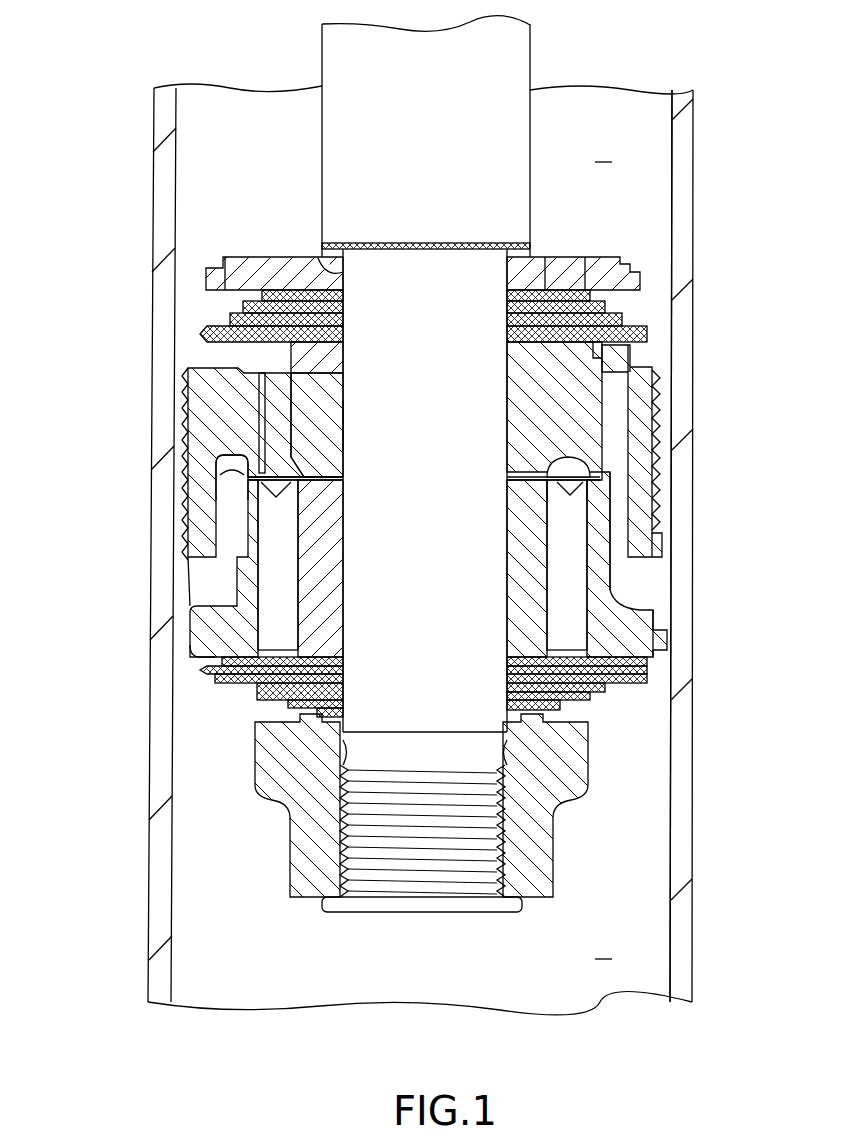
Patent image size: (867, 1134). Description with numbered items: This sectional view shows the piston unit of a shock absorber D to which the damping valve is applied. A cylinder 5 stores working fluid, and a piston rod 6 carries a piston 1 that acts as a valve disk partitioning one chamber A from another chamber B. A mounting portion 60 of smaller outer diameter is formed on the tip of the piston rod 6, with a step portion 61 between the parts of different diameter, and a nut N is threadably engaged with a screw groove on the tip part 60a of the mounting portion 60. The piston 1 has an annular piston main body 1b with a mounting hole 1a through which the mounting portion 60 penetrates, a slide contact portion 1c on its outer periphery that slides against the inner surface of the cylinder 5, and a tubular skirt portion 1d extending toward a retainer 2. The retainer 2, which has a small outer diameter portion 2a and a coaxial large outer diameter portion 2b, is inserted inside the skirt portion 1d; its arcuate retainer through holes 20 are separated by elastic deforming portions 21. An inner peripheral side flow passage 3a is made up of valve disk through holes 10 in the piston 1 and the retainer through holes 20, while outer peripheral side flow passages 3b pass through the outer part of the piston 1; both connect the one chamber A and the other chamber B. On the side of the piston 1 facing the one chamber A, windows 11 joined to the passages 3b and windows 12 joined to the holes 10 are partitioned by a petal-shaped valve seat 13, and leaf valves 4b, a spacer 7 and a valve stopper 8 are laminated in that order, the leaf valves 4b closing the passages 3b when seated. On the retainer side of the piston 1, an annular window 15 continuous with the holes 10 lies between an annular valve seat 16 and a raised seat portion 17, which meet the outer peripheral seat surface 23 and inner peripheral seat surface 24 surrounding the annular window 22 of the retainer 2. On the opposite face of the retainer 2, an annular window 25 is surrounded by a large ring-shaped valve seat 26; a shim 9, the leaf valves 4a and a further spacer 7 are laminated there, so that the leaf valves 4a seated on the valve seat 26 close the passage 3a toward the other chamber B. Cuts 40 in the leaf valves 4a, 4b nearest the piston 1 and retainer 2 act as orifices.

The shock absorber D is at (145, 198).
The one chamber A is at (603, 150).
The other chamber B is at (603, 947).
The piston rod 6 is at (515, 78).
The step portion 61 is at (332, 268).
The spacer 7 is at (552, 290).
The valve stopper 8 is at (620, 262).
The windows 11 is at (595, 300).
The petal-shaped valve seat 13 is at (645, 330).
The piston 1 is at (660, 356).
The mounting hole 1a is at (500, 380).
The piston main body 1b is at (192, 432).
The slide contact portion 1c is at (664, 508).
The tubular skirt portion 1d is at (188, 542).
The inner peripheral side flow passage 3a is at (250, 495).
The outer peripheral side flow passages 3b is at (664, 420).
The valve disk through holes 10 is at (258, 402).
The windows 12 is at (293, 362).
The cuts 40 is at (630, 378).
The leaf valves 4a is at (560, 710).
The leaf valves 4b is at (205, 340).
The outer peripheral seat surface 23 is at (343, 425).
The inner peripheral seat surface 24 is at (343, 470).
The annular window 22 is at (343, 508).
The annular window 15 is at (545, 475).
The annular seat portion 17 is at (500, 496).
The annular valve seat 16 is at (575, 542).
The mounting portion 60 is at (330, 580).
The tip part 60a is at (345, 820).
The retainer through holes 20 is at (258, 600).
The retainer 2 is at (622, 590).
The small outer diameter portion 2a is at (235, 570).
The large outer diameter portion 2b is at (212, 645).
The elastic deforming portions 21 is at (608, 548).
The shim 9 is at (655, 637).
The valve seat 26 is at (215, 662).
The annular window 25 is at (215, 680).
The nut N is at (640, 830).
The cylinder 5 is at (693, 915).